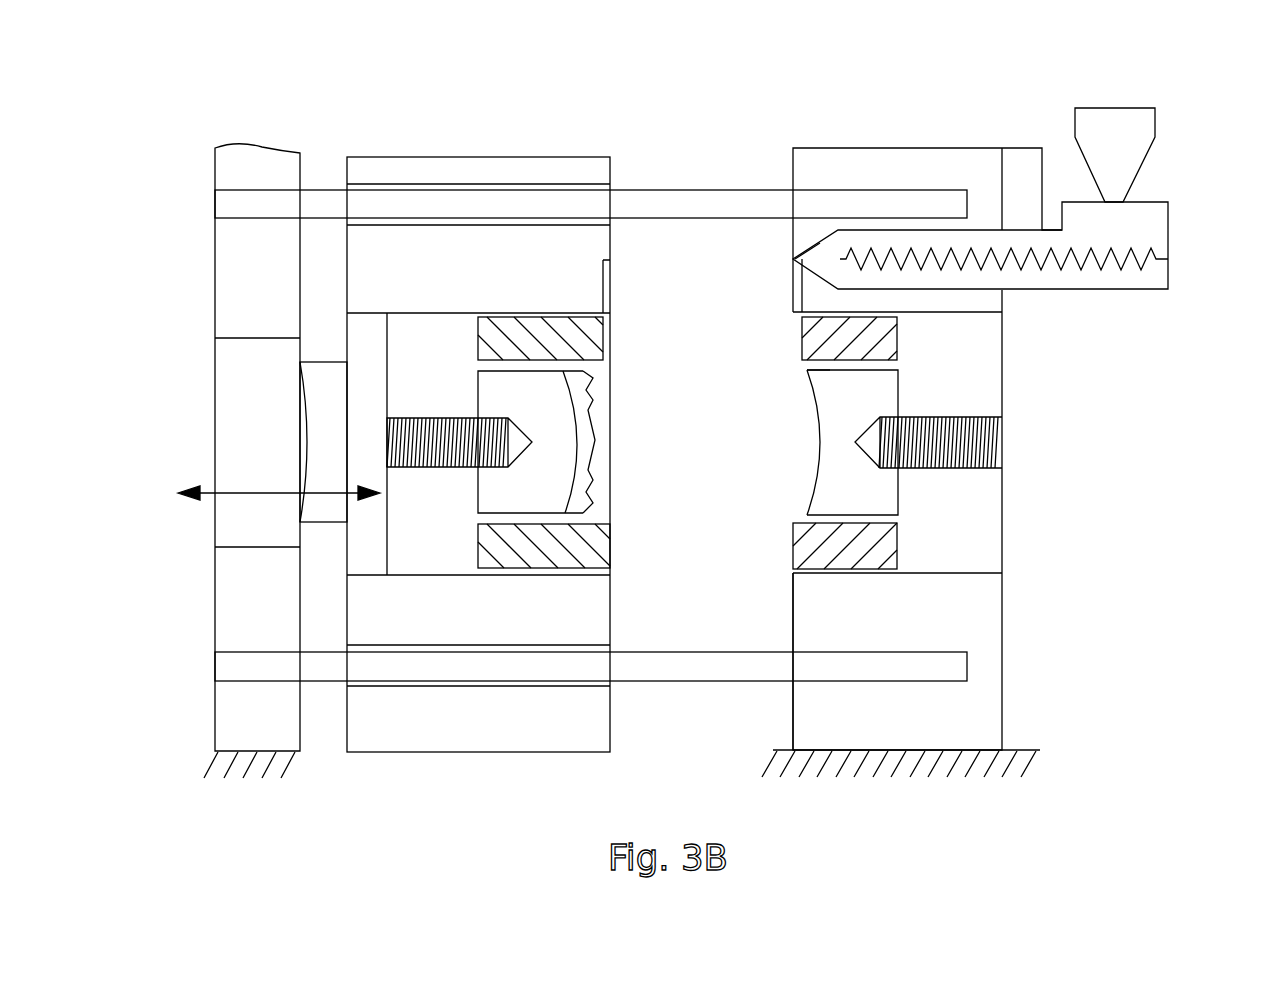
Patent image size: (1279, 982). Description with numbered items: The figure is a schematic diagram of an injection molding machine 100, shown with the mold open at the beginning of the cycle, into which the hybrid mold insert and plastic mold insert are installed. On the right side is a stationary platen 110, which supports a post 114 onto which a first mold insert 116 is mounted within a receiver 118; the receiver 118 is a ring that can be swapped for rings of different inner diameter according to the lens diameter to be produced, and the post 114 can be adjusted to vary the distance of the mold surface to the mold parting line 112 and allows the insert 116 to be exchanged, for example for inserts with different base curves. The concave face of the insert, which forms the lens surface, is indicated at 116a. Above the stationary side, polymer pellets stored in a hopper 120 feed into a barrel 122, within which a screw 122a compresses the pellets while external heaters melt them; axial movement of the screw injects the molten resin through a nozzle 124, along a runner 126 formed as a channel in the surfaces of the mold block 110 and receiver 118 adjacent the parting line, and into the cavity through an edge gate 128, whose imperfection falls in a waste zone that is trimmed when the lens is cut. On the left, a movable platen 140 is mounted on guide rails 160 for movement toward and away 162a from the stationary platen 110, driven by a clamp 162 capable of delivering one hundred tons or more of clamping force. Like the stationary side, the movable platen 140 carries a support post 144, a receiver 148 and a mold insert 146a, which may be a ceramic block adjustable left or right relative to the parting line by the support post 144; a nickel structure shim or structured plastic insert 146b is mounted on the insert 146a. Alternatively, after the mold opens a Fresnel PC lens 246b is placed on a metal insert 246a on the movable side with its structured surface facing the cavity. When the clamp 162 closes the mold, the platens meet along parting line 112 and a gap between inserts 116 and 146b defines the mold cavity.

The injection molding machine 100 is at (684, 425).
The stationary platen 110 is at (968, 717).
The mold parting line 112 is at (793, 710).
The post 114 is at (977, 413).
The first mold insert 116 is at (891, 442).
The concave cavity surface 116a is at (810, 432).
The receiver 118 is at (878, 557).
The hopper 120 is at (1143, 168).
The barrel 122 is at (1021, 205).
The screw 122a is at (1168, 270).
The nozzle 124 is at (820, 240).
The runner 126 is at (797, 286).
The edge gate 128 is at (805, 375).
The movable platen 140 is at (415, 715).
The support post 144 is at (417, 418).
The mold insert 146a is at (494, 314).
The metal insert 246a is at (498, 385).
The structured insert 146b is at (665, 436).
The Fresnel PC lens 246b is at (590, 395).
The receiver 148 is at (592, 543).
The guide rails 160 is at (645, 205).
The clamp 162 is at (237, 422).
The movement toward and away 162a is at (235, 503).